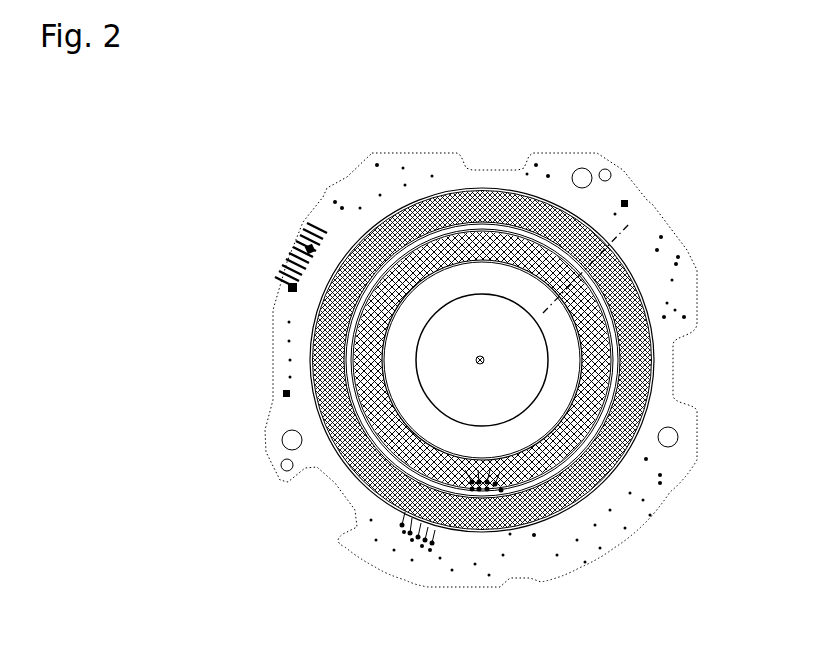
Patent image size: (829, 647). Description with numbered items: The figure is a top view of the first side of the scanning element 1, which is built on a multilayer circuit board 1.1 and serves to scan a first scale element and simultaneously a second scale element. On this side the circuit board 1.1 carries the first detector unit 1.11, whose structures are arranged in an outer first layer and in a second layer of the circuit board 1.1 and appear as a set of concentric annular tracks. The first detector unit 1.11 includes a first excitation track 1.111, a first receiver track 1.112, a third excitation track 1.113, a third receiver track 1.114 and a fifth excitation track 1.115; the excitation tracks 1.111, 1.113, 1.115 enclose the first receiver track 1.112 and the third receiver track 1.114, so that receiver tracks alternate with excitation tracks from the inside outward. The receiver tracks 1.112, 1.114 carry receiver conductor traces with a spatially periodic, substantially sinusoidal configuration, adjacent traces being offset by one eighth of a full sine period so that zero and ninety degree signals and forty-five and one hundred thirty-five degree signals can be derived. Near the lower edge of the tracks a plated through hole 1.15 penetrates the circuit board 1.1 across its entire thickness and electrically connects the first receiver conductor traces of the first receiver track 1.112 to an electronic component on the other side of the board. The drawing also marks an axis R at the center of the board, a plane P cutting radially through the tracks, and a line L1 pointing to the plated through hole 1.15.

The scanning element 1 is at (270, 222).
The circuit board 1.1 is at (365, 185).
The first detector unit 1.11 is at (486, 360).
The first excitation track 1.111 is at (418, 438).
The first receiver track 1.112 is at (605, 332).
The third excitation track 1.113 is at (358, 412).
The third receiver track 1.114 is at (628, 383).
The fifth excitation track 1.115 is at (311, 360).
The plated through hole 1.15 is at (500, 485).
The connection line L1 is at (481, 478).
The axis of rotation R is at (476, 360).
The section plane P is at (618, 238).